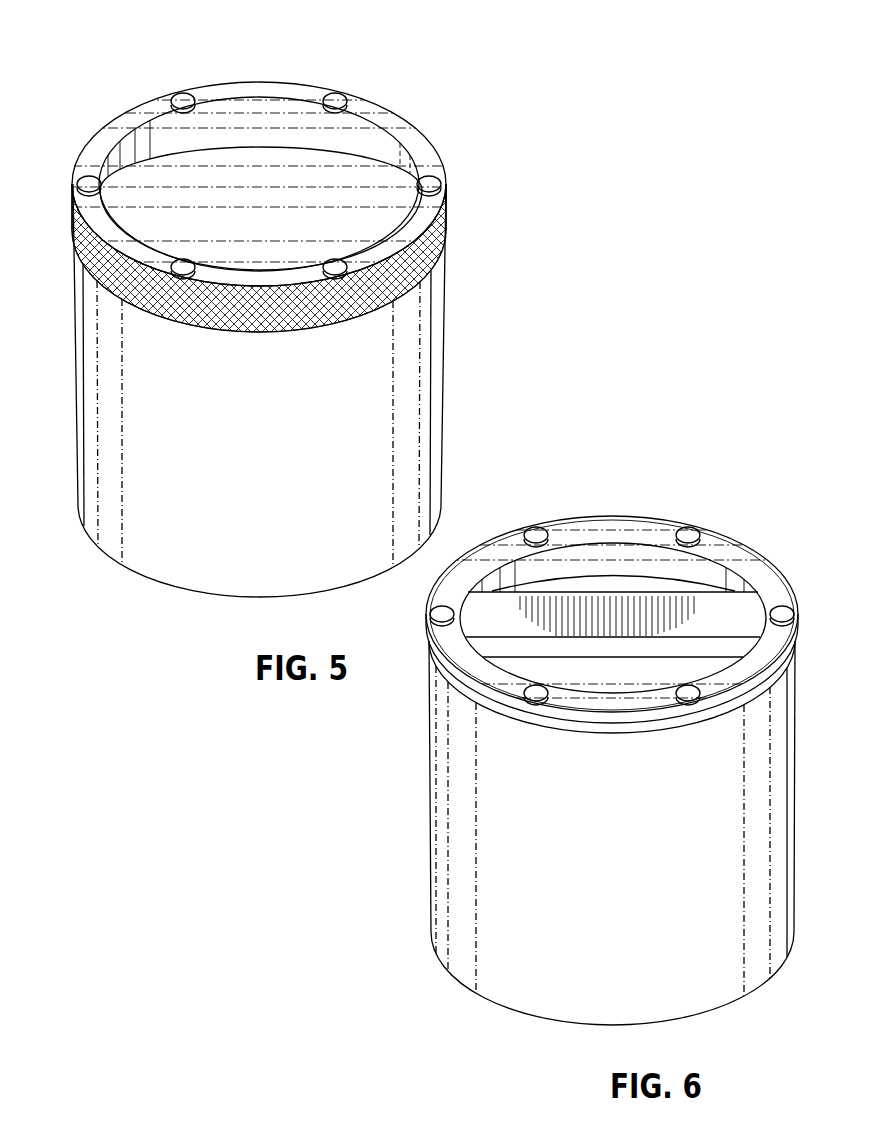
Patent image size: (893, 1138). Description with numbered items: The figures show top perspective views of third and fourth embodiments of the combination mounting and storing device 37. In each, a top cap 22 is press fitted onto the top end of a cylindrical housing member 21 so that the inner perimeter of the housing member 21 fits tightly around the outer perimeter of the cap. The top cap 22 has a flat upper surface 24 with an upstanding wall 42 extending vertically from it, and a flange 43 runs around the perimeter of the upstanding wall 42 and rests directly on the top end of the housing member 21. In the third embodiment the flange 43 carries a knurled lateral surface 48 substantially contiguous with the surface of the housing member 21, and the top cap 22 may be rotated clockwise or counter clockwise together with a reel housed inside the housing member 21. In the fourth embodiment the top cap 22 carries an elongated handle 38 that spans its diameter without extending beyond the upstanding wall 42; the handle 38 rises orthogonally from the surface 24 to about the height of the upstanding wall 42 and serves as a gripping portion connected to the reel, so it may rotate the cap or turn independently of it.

In FIG. 5, the housing member 21 is at (436, 368).
In FIG. 6, the housing member 21 is at (787, 770).
In FIG. 5, the top cap 22 is at (228, 120).
In FIG. 6, the top cap 22 is at (580, 550).
In FIG. 5, the flat upper surface 24 is at (160, 178).
In FIG. 6, the flat upper surface 24 is at (505, 663).
In FIG. 5, the combination mounting and storing device 37 is at (304, 319).
In FIG. 6, the combination mounting and storing device 37 is at (620, 747).
In FIG. 6, the elongated handle 38 is at (620, 603).
In FIG. 5, the upstanding wall 42 is at (310, 118).
In FIG. 6, the upstanding wall 42 is at (712, 565).
In FIG. 5, the flange 43 is at (438, 205).
In FIG. 5, the knurled lateral surface 48 is at (279, 319).